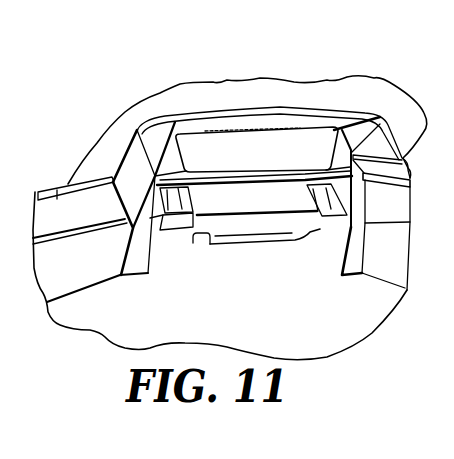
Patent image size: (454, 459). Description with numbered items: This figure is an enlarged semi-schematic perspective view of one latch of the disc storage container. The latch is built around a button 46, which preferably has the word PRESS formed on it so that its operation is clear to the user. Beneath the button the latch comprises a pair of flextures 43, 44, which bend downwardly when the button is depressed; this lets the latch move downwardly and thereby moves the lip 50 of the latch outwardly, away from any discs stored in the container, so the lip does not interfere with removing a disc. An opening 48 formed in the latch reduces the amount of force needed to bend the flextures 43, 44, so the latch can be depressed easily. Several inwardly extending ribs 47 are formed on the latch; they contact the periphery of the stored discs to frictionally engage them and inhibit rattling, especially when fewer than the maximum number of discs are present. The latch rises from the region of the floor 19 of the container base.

The floor 19 is at (230, 218).
The flexture 43 is at (199, 235).
The flexture 44 is at (311, 234).
The button 46 is at (327, 137).
The ribs 47 is at (195, 199).
The opening 48 is at (243, 232).
The lip 50 is at (183, 174).